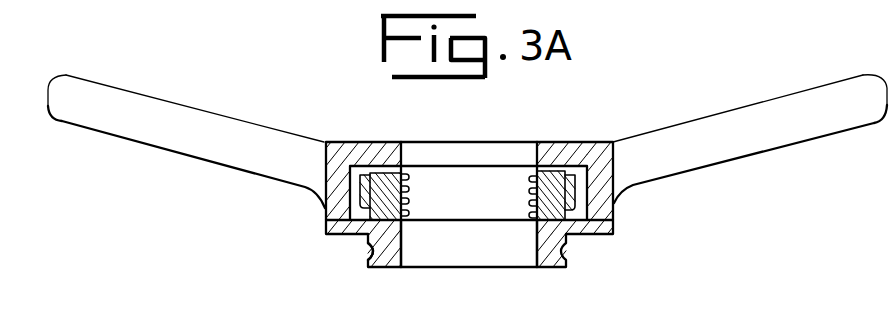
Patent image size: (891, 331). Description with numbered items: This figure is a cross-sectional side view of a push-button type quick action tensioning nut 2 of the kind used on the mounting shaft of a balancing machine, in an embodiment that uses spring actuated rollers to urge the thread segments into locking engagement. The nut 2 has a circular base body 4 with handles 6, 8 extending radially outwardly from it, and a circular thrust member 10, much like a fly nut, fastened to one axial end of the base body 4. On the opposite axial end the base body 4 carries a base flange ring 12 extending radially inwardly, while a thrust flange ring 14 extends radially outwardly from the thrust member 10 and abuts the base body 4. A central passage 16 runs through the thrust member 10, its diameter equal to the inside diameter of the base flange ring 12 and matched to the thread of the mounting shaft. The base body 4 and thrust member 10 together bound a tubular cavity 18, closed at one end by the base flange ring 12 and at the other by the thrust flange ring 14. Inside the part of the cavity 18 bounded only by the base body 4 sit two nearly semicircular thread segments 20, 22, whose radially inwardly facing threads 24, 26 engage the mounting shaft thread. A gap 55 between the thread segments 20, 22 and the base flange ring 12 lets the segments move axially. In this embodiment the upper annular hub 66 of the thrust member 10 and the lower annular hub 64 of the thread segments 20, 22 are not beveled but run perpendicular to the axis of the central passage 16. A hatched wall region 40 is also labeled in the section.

The quick action tensioning nut 2 is at (333, 299).
The base body 4 is at (615, 204).
The handle 6 is at (187, 118).
The handle 8 is at (718, 123).
The thrust member 10 is at (552, 260).
The base flange ring 12 is at (562, 147).
The thrust flange ring 14 is at (590, 226).
The central passage 16 is at (403, 243).
The tubular cavity 18 is at (613, 175).
The thread segment 20 is at (385, 177).
The thread segment 22 is at (558, 177).
The thread 24 is at (414, 180).
The thread 26 is at (525, 190).
The left side wall 40 is at (346, 170).
The gap 55 is at (390, 173).
The lower annular hub 64 is at (365, 227).
The upper annular hub 66 is at (390, 219).